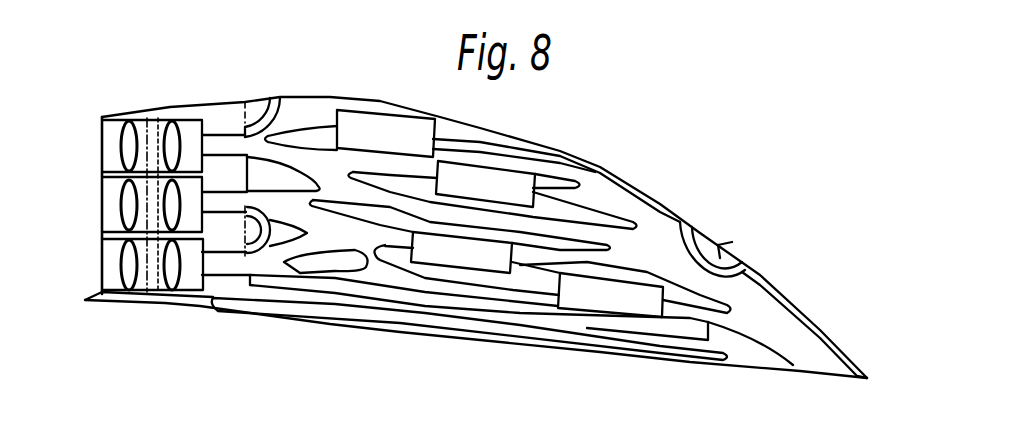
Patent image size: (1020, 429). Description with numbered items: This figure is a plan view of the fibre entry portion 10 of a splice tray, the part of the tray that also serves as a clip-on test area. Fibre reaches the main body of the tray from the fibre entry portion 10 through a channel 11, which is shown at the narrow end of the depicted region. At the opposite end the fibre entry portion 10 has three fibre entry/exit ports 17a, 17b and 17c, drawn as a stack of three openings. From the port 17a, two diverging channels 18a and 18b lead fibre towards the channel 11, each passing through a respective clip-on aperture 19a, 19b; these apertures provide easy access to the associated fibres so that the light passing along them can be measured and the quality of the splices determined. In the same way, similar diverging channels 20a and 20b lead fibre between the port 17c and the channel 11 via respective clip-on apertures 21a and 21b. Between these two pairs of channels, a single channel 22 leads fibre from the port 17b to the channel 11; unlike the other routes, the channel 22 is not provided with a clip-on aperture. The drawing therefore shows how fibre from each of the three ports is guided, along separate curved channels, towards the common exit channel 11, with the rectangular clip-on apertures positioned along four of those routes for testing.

The fibre entry portion 10 is at (316, 88).
The channel 11 is at (773, 321).
The fibre entry/exit port 17a is at (113, 128).
The fibre entry/exit port 17b is at (102, 199).
The fibre entry/exit port 17c is at (119, 268).
The diverging channel 18a is at (293, 128).
The diverging channel 18b is at (393, 172).
The clip-on aperture 19a is at (362, 132).
The clip-on aperture 19b is at (527, 181).
The diverging channel 20a is at (374, 254).
The diverging channel 20b is at (508, 291).
The clip-on aperture 21a is at (452, 258).
The clip-on aperture 21b is at (632, 306).
The single channel 22 is at (563, 228).